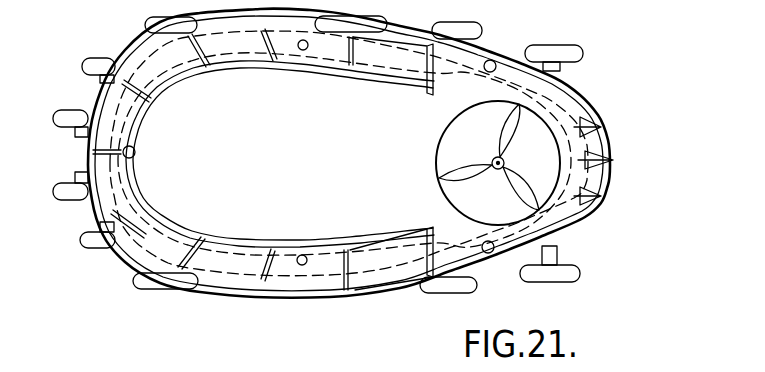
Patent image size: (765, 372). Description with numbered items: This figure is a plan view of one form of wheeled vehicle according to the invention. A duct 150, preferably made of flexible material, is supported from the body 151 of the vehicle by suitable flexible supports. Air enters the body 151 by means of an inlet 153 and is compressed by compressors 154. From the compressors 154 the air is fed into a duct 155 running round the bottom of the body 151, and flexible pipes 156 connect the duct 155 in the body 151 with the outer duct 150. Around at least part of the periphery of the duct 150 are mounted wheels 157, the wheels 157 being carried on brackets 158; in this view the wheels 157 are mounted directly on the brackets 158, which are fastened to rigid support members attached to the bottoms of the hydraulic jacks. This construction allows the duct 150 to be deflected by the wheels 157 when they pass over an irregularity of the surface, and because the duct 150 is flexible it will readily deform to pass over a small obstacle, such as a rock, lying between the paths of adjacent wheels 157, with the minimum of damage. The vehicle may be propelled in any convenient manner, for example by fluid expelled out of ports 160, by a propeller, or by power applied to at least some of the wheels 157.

The duct 150 is at (110, 198).
The body 151 is at (97, 102).
The inlet 153 is at (452, 140).
The compressors 154 is at (515, 185).
The duct 155 is at (463, 70).
The flexible pipes 156 is at (302, 58).
The wheels 157 is at (123, 38).
The brackets 158 is at (560, 69).
The ports 160 is at (610, 160).